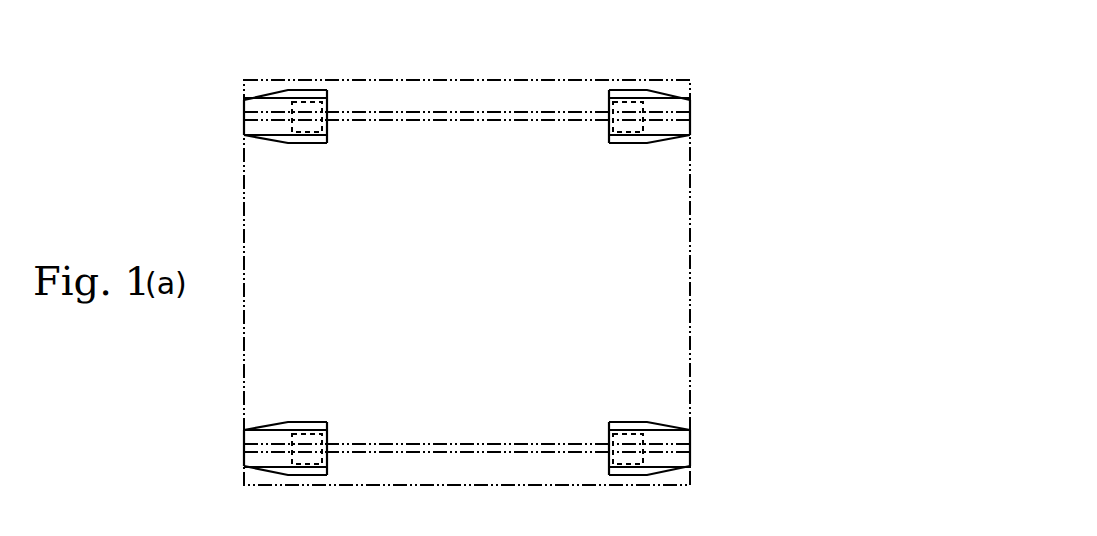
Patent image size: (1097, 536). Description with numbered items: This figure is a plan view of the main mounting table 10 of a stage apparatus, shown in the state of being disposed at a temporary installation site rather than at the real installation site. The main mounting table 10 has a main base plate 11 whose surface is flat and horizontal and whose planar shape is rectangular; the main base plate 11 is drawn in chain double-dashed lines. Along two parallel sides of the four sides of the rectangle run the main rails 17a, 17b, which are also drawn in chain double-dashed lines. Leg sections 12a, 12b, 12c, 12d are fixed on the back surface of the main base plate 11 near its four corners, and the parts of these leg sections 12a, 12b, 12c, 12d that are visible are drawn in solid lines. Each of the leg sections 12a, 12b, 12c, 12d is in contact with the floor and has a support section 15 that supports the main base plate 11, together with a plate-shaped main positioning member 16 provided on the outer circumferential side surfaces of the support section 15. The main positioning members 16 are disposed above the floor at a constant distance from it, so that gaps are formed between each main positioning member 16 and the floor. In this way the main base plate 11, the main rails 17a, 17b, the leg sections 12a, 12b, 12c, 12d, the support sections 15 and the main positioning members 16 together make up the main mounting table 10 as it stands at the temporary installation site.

The main mounting table 10 is at (218, 27).
The main base plate 11 is at (692, 272).
The leg section 12a is at (334, 407).
The leg section 12b is at (604, 407).
The leg section 12c is at (604, 163).
The leg section 12d is at (334, 163).
The support section 15 is at (327, 106).
The main positioning member 16 is at (306, 138).
The main rail 17a is at (440, 122).
The main rail 17b is at (440, 443).